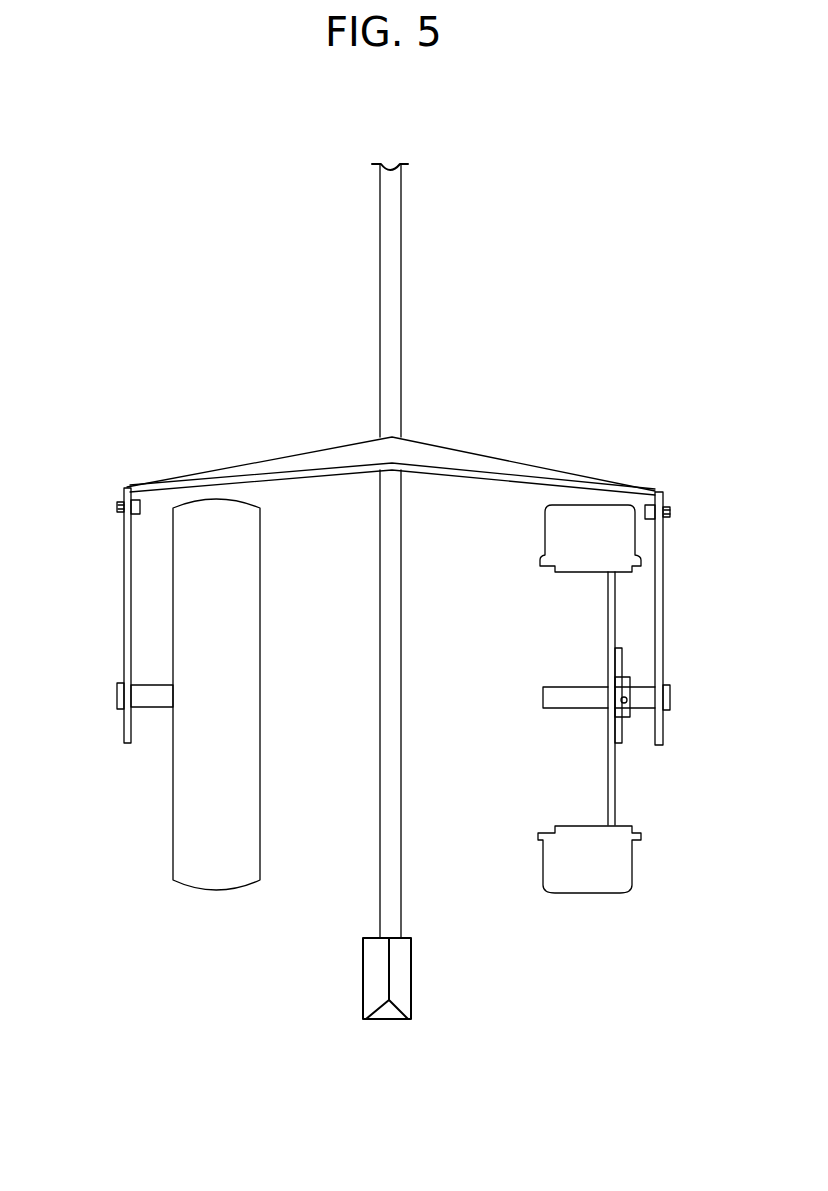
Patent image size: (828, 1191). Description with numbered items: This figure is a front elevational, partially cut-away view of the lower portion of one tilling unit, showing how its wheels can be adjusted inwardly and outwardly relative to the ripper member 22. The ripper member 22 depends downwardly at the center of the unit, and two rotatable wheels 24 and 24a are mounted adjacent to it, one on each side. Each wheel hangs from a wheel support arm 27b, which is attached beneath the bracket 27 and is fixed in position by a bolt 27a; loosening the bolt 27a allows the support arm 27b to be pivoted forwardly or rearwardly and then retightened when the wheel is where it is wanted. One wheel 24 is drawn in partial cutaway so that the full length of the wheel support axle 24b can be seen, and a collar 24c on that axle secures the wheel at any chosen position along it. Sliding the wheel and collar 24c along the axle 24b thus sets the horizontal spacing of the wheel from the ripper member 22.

The ripper member 22 is at (401, 770).
The rotatable wheel 24 is at (628, 850).
The rotatable wheel 24a is at (175, 872).
The wheel support axle 24b is at (145, 703).
The collar 24c is at (628, 712).
The bent support plate 27 is at (477, 458).
The bolt 27a is at (668, 512).
The wheel support arm 27b is at (125, 613).